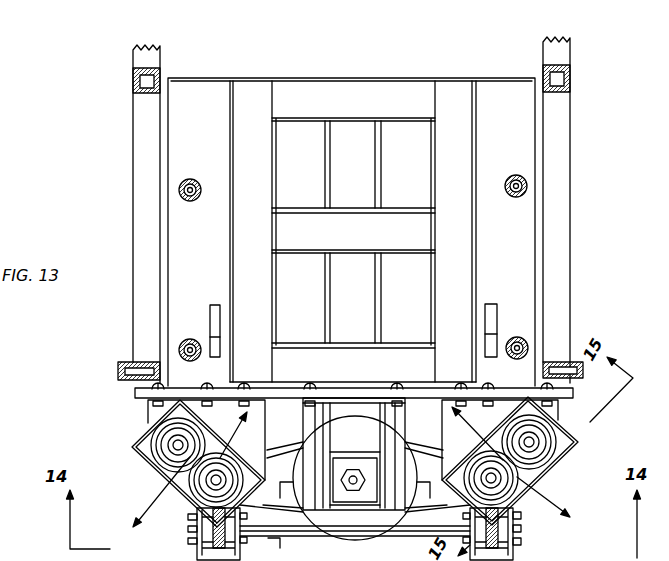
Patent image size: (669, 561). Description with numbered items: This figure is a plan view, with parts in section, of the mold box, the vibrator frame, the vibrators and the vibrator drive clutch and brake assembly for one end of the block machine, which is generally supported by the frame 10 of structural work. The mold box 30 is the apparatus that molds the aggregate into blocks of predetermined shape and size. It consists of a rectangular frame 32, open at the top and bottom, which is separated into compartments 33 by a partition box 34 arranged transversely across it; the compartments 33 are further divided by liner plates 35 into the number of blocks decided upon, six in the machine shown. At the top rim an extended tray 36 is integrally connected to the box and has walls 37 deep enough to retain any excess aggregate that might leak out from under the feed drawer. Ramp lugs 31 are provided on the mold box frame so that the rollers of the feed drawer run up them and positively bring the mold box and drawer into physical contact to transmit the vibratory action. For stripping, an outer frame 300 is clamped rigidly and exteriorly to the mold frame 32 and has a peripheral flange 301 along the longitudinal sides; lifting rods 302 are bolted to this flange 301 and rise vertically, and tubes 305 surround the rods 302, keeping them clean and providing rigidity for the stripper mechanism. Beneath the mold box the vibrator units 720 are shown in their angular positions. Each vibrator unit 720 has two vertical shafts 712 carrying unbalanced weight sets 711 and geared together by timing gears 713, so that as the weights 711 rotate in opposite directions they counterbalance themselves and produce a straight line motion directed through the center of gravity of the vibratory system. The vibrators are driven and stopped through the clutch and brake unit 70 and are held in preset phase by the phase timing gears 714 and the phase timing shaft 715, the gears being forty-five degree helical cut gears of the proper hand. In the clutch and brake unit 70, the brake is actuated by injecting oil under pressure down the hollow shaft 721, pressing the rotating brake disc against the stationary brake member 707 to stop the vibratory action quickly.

The frame 10 is at (575, 82).
The mold box 30 is at (467, 292).
The peripheral flange 301 is at (180, 125).
The lifting rods 302 is at (183, 187).
The tubes 305 is at (527, 187).
The ramp lugs 31 is at (213, 318).
The rectangular frame 32 is at (240, 245).
The compartments 33 is at (316, 166).
The partition box 34 is at (356, 240).
The liner plates 35 is at (330, 140).
The extended tray 36 is at (460, 243).
The walls 37 is at (477, 155).
The outer frame 300 is at (134, 388).
The clutch and brake unit 70 is at (290, 449).
The brake member 707 is at (343, 538).
The unbalanced weight sets 711 is at (224, 443).
The vertical shafts 712 is at (173, 451).
The timing gears 713 is at (162, 440).
The phase timing gears 714 is at (207, 551).
The phase timing shaft 715 is at (266, 535).
The vibrator units 720 is at (180, 484).
The hollow shaft 721 is at (350, 470).